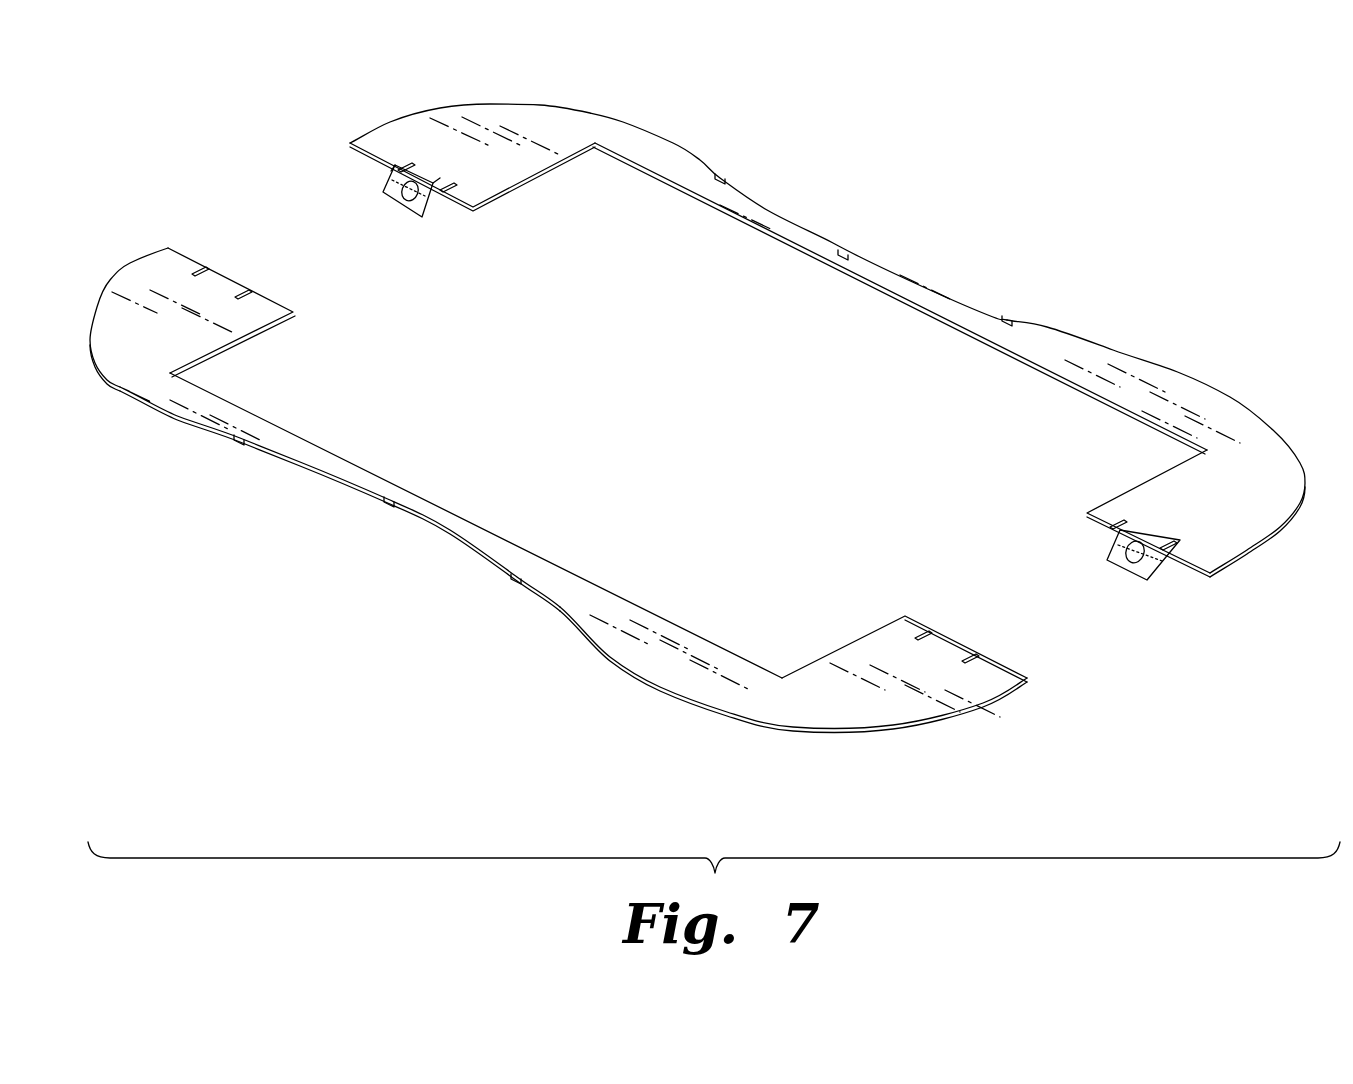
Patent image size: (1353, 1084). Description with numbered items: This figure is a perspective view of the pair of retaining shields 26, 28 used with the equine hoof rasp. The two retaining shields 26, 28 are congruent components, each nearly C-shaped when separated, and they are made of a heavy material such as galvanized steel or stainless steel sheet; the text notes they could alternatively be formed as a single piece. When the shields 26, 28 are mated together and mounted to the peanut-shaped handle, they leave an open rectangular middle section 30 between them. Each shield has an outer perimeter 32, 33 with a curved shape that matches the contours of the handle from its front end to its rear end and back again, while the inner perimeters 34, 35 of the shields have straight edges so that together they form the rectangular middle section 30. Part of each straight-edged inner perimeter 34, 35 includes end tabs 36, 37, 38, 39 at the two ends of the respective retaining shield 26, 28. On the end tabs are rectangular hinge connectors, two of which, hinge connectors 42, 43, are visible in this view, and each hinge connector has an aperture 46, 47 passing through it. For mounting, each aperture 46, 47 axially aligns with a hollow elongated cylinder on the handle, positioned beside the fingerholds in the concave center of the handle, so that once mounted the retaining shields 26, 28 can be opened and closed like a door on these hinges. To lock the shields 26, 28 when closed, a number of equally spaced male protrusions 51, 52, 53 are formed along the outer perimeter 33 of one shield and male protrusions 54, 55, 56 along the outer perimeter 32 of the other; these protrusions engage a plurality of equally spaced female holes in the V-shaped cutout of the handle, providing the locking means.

The retaining shield 26 is at (137, 400).
The retaining shield 28 is at (623, 120).
The open rectangular middle section 30 is at (690, 416).
The outer perimeter 32 is at (1200, 370).
The outer perimeter 33 is at (707, 716).
The inner perimeter 34 is at (1100, 397).
The inner perimeter 35 is at (698, 627).
The end tab 36 is at (283, 316).
The end tab 37 is at (873, 626).
The end tab 38 is at (512, 196).
The end tab 39 is at (1100, 505).
The rectangular hinge connector 42 is at (369, 228).
The rectangular hinge connector 43 is at (1128, 590).
The aperture 46 is at (392, 196).
The aperture 47 is at (1113, 565).
The male protrusion 51 is at (515, 582).
The male protrusion 52 is at (387, 507).
The male protrusion 53 is at (237, 443).
The male protrusion 54 is at (1010, 318).
The male protrusion 55 is at (845, 253).
The male protrusion 56 is at (718, 177).